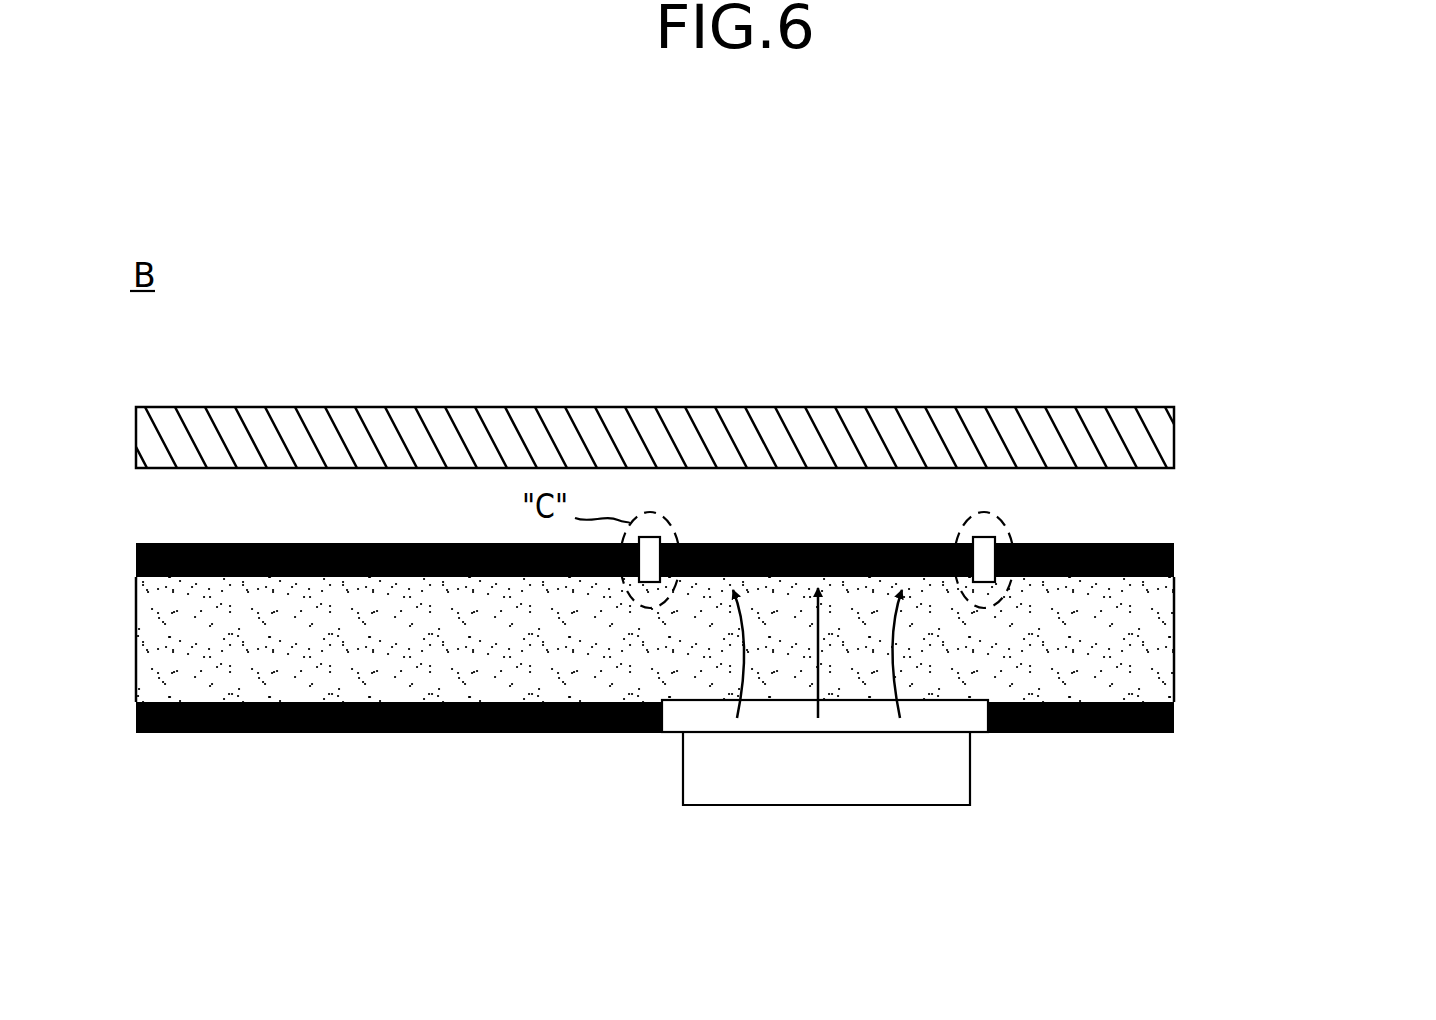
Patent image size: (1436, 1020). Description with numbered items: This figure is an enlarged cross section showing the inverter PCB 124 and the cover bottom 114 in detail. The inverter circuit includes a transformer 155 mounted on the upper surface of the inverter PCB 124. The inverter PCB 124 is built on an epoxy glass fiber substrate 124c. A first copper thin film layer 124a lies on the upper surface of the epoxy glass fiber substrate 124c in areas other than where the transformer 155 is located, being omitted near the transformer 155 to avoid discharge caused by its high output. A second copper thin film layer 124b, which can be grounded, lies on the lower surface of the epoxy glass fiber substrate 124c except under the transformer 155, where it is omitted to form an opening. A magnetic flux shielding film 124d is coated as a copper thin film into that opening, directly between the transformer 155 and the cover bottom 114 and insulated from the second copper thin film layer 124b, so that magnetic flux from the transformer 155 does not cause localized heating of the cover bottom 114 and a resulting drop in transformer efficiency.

The cover bottom 114 is at (1167, 432).
The inverter PCB 124 is at (1303, 562).
The first copper thin film layer 124a is at (1174, 720).
The second copper thin film layer 124b is at (1174, 560).
The epoxy glass fiber substrate 124c is at (1174, 640).
The magnetic flux shielding film 124d is at (808, 542).
The transformer 155 is at (933, 797).